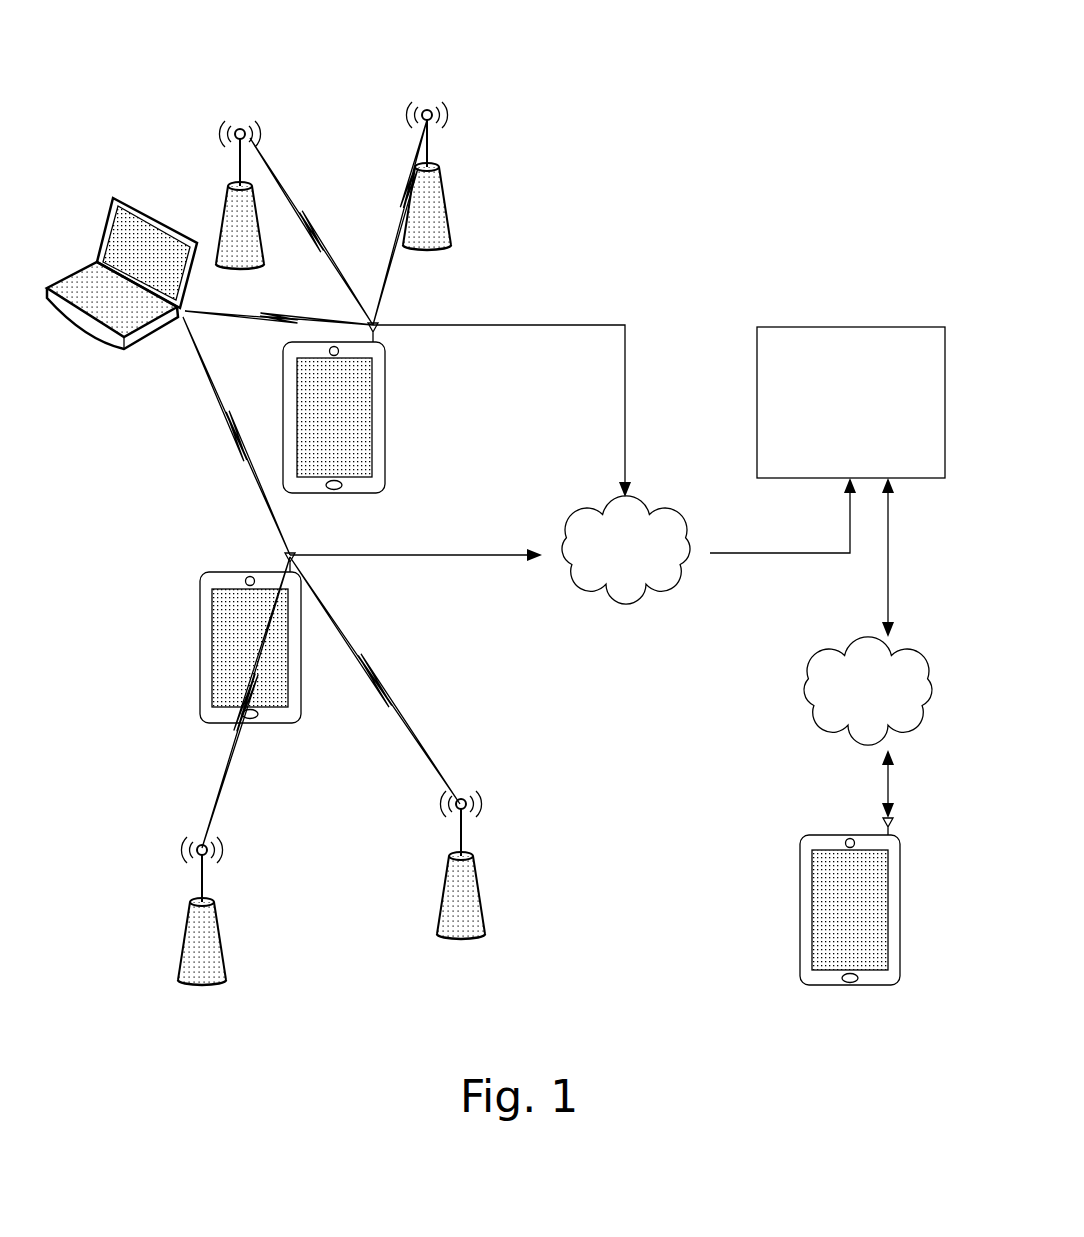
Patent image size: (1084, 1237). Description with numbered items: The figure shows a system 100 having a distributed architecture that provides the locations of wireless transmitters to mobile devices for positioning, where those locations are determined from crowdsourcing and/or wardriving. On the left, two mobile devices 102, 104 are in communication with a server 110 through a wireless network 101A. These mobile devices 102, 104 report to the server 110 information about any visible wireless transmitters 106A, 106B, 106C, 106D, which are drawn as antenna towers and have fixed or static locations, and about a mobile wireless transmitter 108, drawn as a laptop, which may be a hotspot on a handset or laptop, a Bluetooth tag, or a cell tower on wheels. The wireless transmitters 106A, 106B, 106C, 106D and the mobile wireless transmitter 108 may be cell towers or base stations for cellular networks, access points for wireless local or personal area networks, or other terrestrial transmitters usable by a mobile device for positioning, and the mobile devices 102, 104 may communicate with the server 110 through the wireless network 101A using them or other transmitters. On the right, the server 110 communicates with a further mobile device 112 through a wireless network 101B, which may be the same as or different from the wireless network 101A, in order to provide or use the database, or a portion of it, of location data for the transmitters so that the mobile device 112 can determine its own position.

The system 100 is at (753, 86).
The wireless network 101A is at (625, 606).
The wireless network 101B is at (783, 700).
The mobile device 102 is at (385, 445).
The mobile device 104 is at (200, 655).
The wireless transmitter 106A is at (452, 228).
The wireless transmitter 106B is at (222, 215).
The wireless transmitter 106C is at (485, 915).
The wireless transmitter 106D is at (224, 960).
The mobile wireless transmitter 108 is at (125, 347).
The server 110 is at (832, 327).
The mobile device 112 is at (800, 905).